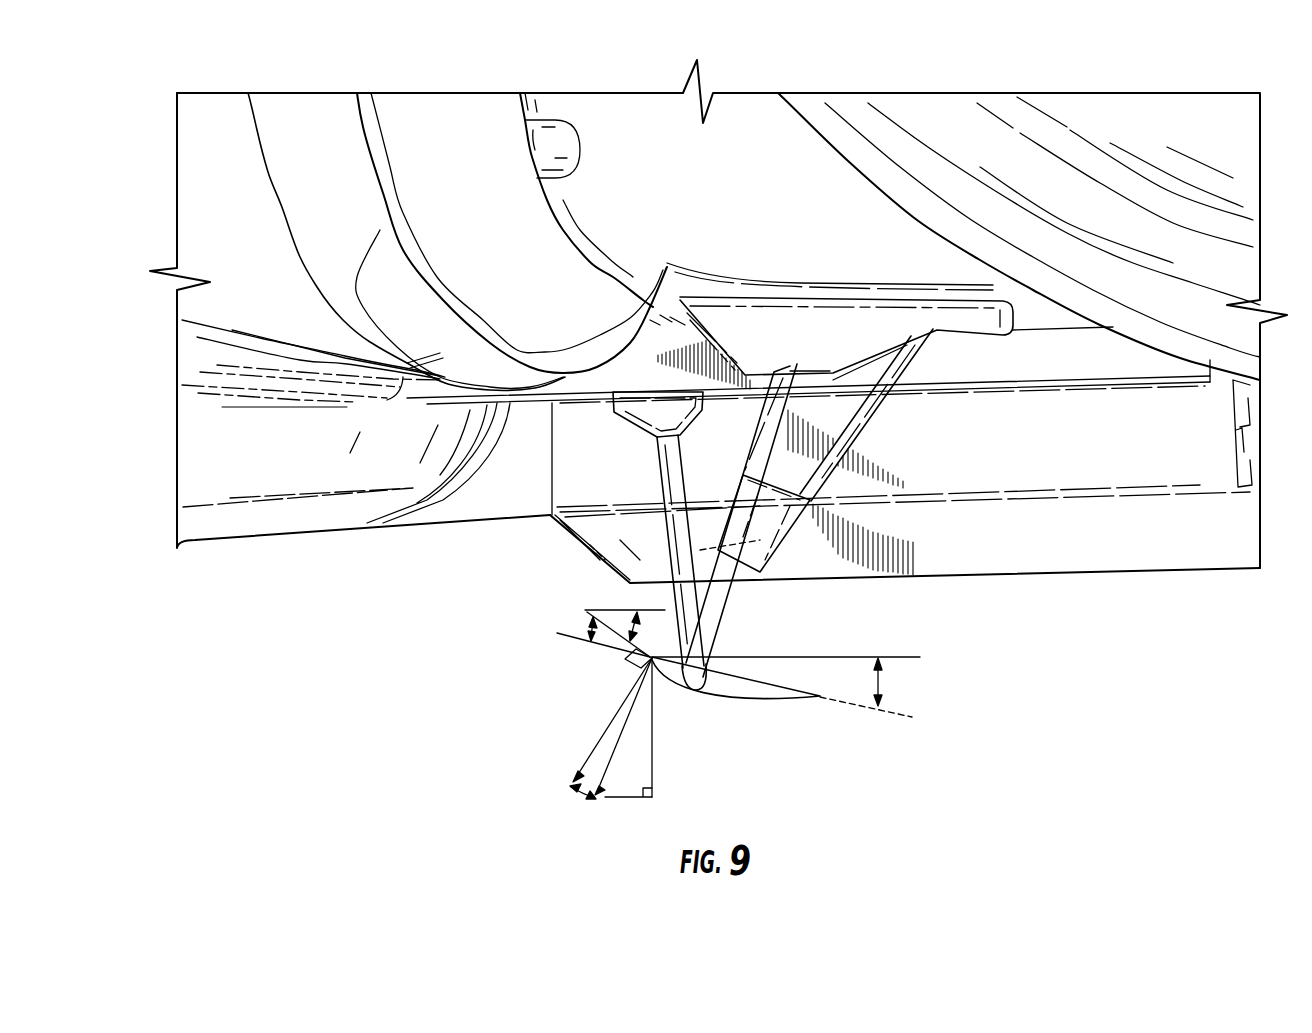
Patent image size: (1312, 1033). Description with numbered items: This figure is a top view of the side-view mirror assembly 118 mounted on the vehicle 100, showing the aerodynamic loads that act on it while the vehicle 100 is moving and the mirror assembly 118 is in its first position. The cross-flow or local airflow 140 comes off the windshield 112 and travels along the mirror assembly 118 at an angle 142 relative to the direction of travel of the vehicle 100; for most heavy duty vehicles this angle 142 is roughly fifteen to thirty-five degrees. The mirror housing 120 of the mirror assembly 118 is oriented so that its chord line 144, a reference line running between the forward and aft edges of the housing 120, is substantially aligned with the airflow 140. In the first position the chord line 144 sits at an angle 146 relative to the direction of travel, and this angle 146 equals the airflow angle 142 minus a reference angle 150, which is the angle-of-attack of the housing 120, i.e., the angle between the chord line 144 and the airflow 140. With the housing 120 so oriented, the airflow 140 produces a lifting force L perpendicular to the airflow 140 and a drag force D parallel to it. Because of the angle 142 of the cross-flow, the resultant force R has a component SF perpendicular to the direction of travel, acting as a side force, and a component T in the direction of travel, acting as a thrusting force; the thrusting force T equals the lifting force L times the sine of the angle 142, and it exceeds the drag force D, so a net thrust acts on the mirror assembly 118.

The vehicle 100 is at (718, 399).
The windshield 112 is at (280, 169).
The side-view mirror assembly 118 is at (813, 535).
The mirror housing 120 is at (815, 723).
The local airflow 140 is at (585, 616).
The angle 142 is at (628, 615).
The chord line 144 is at (898, 717).
The angle 146 is at (882, 681).
The reference angle 150 is at (588, 633).
The lifting force L is at (612, 717).
The resultant force R is at (605, 762).
The drag force D is at (583, 792).
The side force SF is at (652, 730).
The thrusting force T is at (630, 798).